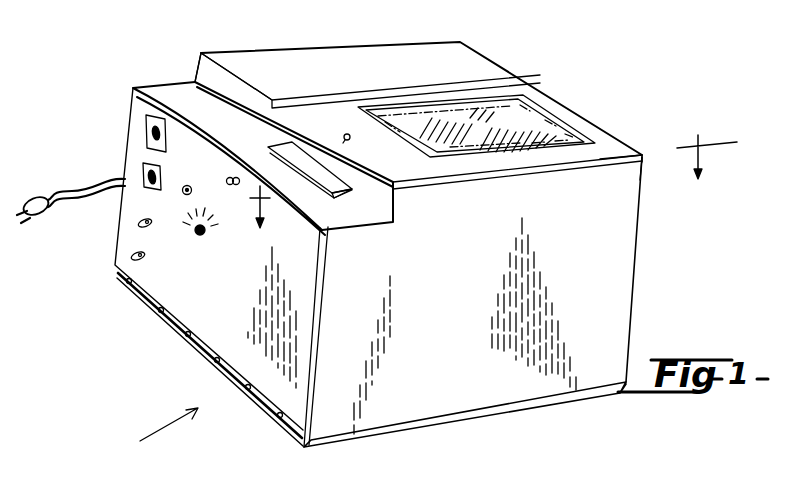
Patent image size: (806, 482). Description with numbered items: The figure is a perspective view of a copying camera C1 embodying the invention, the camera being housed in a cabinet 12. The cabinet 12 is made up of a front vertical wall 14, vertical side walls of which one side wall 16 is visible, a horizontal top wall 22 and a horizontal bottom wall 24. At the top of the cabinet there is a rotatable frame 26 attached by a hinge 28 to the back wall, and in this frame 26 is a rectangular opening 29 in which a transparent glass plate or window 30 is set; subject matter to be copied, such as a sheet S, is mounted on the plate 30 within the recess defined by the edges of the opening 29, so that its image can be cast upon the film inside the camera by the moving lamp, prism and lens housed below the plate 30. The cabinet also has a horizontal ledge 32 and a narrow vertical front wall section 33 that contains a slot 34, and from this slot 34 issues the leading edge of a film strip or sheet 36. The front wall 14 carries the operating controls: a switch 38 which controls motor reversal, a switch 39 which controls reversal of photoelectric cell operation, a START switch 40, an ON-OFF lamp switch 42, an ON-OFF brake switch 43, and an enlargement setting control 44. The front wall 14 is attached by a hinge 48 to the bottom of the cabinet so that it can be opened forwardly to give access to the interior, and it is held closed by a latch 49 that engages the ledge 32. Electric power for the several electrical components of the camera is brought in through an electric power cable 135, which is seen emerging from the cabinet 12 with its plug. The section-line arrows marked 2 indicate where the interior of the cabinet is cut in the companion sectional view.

The cabinet 12 is at (437, 385).
The front vertical wall 14 is at (232, 336).
The vertical side wall 16 is at (604, 335).
The horizontal top wall 22 is at (430, 56).
The horizontal bottom wall 24 is at (368, 438).
The rotatable frame 26 is at (602, 145).
The hinge 28 is at (643, 163).
The rectangular opening 29 is at (546, 102).
The transparent glass plate 30 is at (556, 135).
The sheet S is at (504, 107).
The horizontal ledge 32 is at (170, 100).
The narrow vertical front wall section 33 is at (209, 72).
The slot 34 is at (394, 196).
The film strip or sheet 36 is at (345, 192).
The switch 38 is at (140, 172).
The switch 39 is at (146, 124).
The START switch 40 is at (190, 186).
The ON-OFF lamp switch 42 is at (138, 224).
The ON-OFF brake switch 43 is at (131, 257).
The enlargement setting control 44 is at (196, 236).
The hinge 48 is at (128, 284).
The latch 49 is at (243, 183).
The electric power cable 135 is at (64, 188).
The copying camera C1 is at (147, 431).
The section line 2 is at (485, 184).